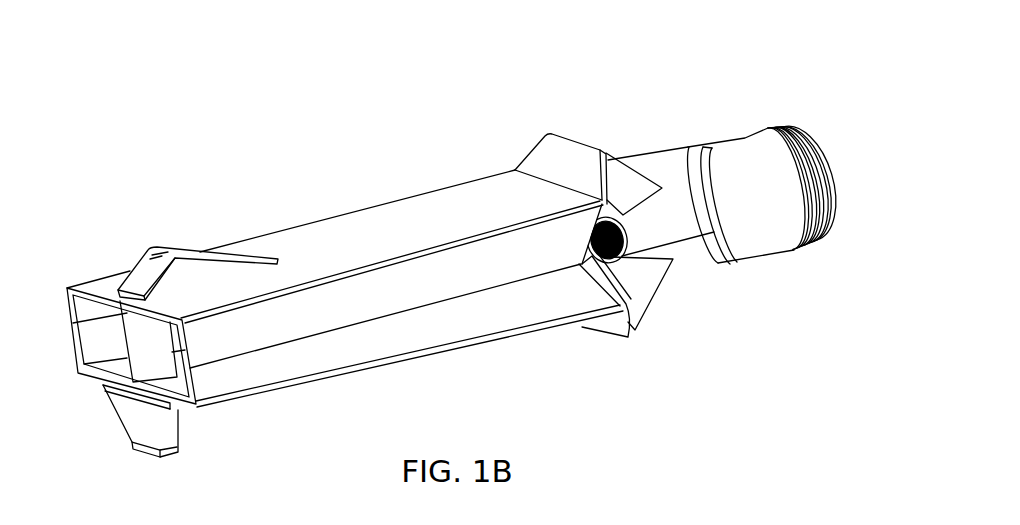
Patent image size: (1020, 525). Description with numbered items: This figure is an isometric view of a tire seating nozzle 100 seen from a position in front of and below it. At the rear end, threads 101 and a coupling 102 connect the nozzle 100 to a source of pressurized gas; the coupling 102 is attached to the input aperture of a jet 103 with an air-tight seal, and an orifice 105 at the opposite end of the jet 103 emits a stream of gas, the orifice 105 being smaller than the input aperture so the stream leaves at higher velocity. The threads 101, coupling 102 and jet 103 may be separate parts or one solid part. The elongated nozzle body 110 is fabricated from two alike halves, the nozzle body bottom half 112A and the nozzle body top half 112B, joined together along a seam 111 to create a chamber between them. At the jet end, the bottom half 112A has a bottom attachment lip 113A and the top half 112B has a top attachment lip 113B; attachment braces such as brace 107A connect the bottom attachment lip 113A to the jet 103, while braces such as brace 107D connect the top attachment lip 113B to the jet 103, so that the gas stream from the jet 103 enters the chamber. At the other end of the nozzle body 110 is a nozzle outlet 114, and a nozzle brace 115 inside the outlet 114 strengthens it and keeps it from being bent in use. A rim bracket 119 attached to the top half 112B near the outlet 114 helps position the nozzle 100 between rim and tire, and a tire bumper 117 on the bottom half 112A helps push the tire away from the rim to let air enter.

The nozzle 100 is at (634, 70).
The threads 101 is at (813, 242).
The coupling 102 is at (753, 223).
The jet 103 is at (683, 225).
The orifice 105 is at (597, 254).
The attachment brace 107A is at (630, 185).
The attachment brace 107D is at (642, 290).
The nozzle body 110 is at (292, 403).
The seam 111 is at (317, 333).
The nozzle body bottom half 112A is at (397, 283).
The nozzle body top half 112B is at (413, 328).
The bottom attachment lip 113A is at (572, 137).
The top attachment lip 113B is at (595, 330).
The nozzle outlet 114 is at (92, 393).
The nozzle brace 115 is at (133, 330).
The tire bumper 117 is at (178, 248).
The rim bracket 119 is at (179, 442).